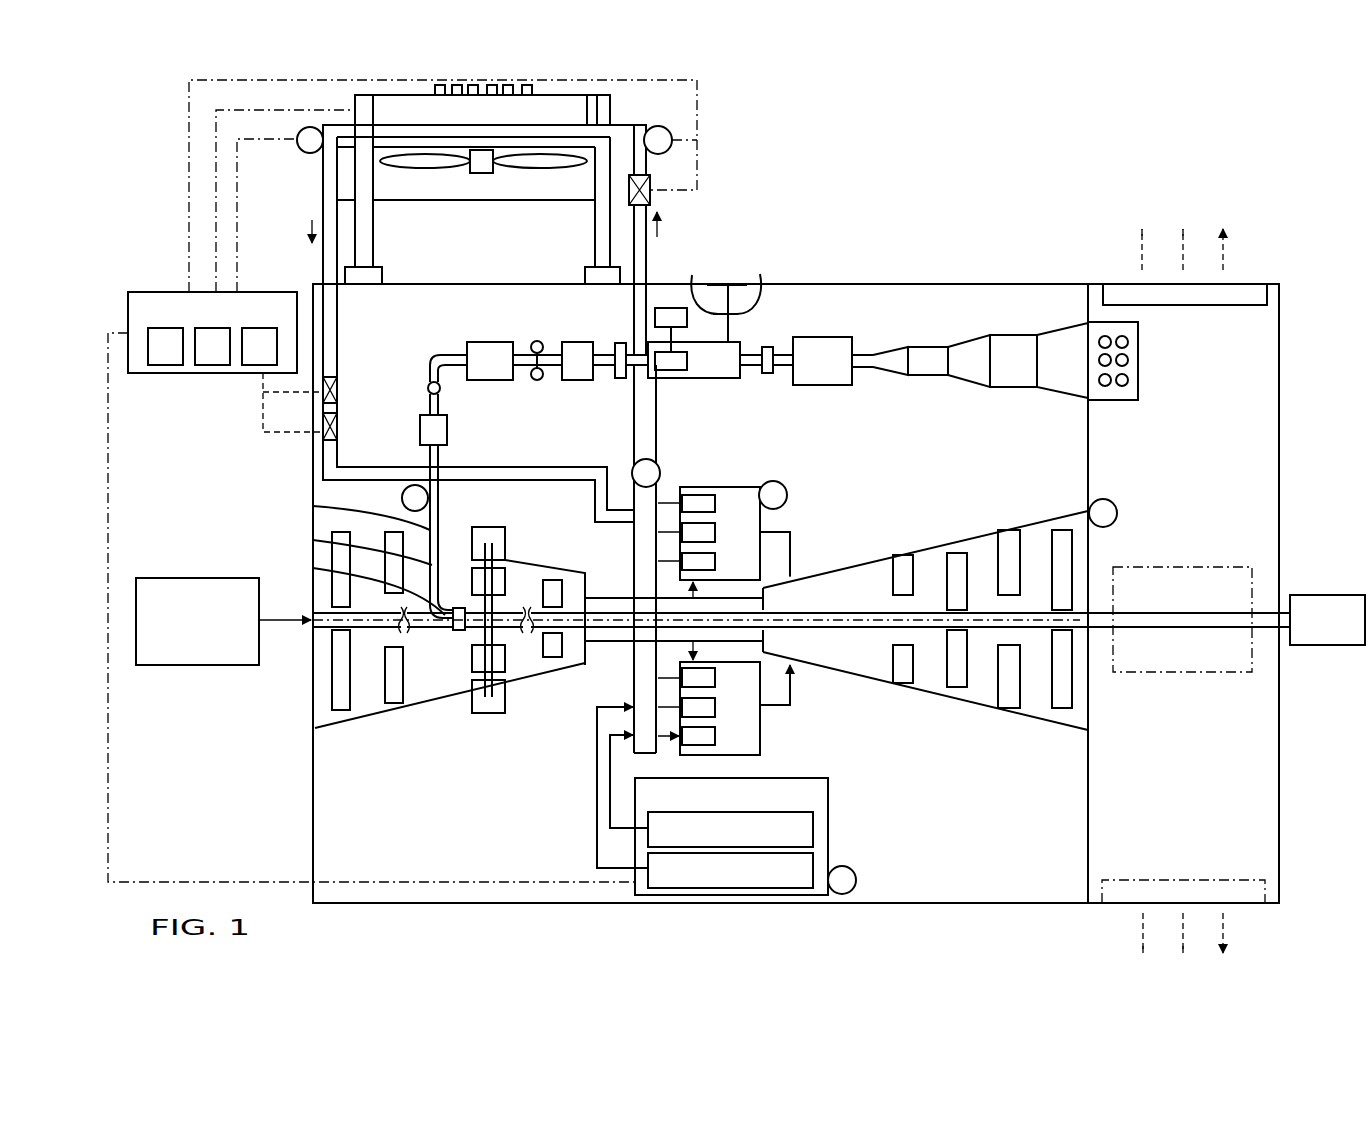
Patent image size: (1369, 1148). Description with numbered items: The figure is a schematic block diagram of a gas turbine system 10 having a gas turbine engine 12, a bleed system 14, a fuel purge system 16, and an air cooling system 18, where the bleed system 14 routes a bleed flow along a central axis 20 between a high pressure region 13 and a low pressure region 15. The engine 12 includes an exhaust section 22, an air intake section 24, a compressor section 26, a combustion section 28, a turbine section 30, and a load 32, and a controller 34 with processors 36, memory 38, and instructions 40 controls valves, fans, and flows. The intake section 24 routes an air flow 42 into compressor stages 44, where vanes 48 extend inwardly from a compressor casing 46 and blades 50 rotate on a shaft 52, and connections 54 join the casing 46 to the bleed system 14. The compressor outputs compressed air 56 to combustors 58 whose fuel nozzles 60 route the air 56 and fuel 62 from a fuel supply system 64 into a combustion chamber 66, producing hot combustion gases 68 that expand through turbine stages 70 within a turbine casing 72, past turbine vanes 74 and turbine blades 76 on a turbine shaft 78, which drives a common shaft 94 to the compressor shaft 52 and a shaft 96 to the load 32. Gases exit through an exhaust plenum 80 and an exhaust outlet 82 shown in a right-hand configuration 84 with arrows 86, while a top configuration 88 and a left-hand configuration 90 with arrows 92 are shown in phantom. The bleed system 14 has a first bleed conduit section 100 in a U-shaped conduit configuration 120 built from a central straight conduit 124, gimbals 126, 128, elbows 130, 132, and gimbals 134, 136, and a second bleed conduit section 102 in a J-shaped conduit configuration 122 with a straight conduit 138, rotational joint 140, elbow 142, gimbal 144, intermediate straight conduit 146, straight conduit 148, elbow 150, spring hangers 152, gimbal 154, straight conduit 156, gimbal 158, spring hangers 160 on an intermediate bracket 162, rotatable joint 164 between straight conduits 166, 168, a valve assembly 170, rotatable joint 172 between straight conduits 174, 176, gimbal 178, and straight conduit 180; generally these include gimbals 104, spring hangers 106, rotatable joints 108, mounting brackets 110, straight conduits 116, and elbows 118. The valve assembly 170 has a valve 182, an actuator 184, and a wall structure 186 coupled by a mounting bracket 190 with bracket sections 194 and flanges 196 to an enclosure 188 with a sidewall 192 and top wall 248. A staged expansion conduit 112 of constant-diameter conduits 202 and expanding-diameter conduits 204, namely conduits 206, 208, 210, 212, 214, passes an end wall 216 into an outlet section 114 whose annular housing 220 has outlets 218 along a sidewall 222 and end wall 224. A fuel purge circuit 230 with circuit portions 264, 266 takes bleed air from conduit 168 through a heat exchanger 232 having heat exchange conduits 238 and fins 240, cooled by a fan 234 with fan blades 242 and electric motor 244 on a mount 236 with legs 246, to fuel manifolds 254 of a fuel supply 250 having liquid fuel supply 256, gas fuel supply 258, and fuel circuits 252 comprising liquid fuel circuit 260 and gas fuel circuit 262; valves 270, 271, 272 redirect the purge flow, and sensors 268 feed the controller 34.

The gas turbine system 10 is at (916, 201).
The gas turbine engine 12 is at (232, 748).
The high pressure region 13 is at (212, 692).
The bleed system 14 is at (421, 308).
The low pressure region 15 is at (1238, 467).
The fuel purge system 16 is at (265, 470).
The air cooling system 18 is at (637, 71).
The central axis 20 is at (340, 613).
The exhaust section 22 is at (1300, 885).
The air intake section 24 is at (195, 578).
The compressor section 26 is at (218, 720).
The combustion section 28 is at (768, 752).
The turbine section 30 is at (1098, 702).
The load 32 is at (1330, 595).
The controller 34 is at (170, 292).
The processor 36 is at (164, 366).
The memory 38 is at (202, 366).
The instructions 40 is at (253, 366).
The air flow 42 is at (282, 626).
The compressor stages 44 is at (270, 753).
The compressor casing 46 is at (345, 722).
The vanes 48 is at (383, 680).
The blades 50 is at (315, 723).
The shaft 52 is at (313, 628).
The connections 54 is at (508, 560).
The compressed air flow 56 is at (696, 598).
The combustor 58 is at (760, 531).
The fuel nozzles 60 is at (716, 532).
The fuel 62 is at (580, 790).
The fuel supply system 64 is at (940, 833).
The combustion chamber 66 is at (716, 562).
The hot combustion gases 68 is at (791, 548).
The turbine stages 70 is at (912, 518).
The turbine casing 72 is at (1050, 720).
The turbine vanes 74 is at (902, 684).
The turbine blades 76 is at (957, 678).
The turbine shaft 78 is at (1080, 607).
The exhaust plenum 80 is at (1283, 868).
The exhaust outlet 82 is at (1270, 290).
The right-hand configuration 84 is at (1268, 317).
The arrows 86 is at (1227, 257).
The top configuration 88 is at (1268, 653).
The left-hand configuration 90 is at (1282, 918).
The arrows 92 is at (1140, 930).
The common shaft 94 is at (705, 630).
The shaft 96 is at (1152, 630).
The first bleed conduit section 100 is at (489, 736).
The second bleed conduit section 102 is at (849, 222).
The gimbals 104 is at (483, 300).
The spring hangers 106 is at (546, 278).
The rotatable joints 108 is at (609, 381).
The mounting brackets 110 is at (767, 221).
The staged expansion conduit 112 is at (943, 262).
The outlet section 114 is at (1200, 388).
The straight conduits 116 is at (763, 335).
The bending conduits or elbows 118 is at (446, 310).
The U-shaped conduit configuration 120 is at (501, 717).
The J-shaped conduit configuration 122 is at (789, 279).
The central straight conduit 124 is at (585, 655).
The gimbal 126 is at (470, 672).
The gimbal 128 is at (508, 582).
The bending conduit or elbow 130 is at (478, 690).
The bending conduit or elbow 132 is at (483, 547).
The gimbal 134 is at (507, 703).
The gimbal 136 is at (508, 533).
The straight conduit 138 is at (470, 632).
The rotational joint 140 is at (313, 540).
The bending conduit or elbow 142 is at (313, 568).
The gimbal 144 is at (418, 433).
The intermediate straight conduit 146 is at (313, 505).
The straight conduit 148 is at (427, 402).
The bending conduit or elbow 150 is at (447, 353).
The spring hangers 152 is at (428, 387).
The gimbal 154 is at (472, 382).
The straight conduit 156 is at (515, 346).
The gimbal 158 is at (539, 339).
The spring hangers 160 is at (530, 342).
The intermediate bracket 162 is at (531, 371).
The rotatable joint 164 is at (630, 380).
The straight conduit 166 is at (575, 342).
The straight conduit 168 is at (632, 377).
The valve assembly 170 is at (715, 380).
The rotatable joint 172 is at (770, 375).
The straight conduit 174 is at (766, 374).
The straight conduit 176 is at (782, 367).
The gimbal 178 is at (823, 386).
The straight conduit 180 is at (863, 354).
The valve 182 is at (672, 371).
The actuator 184 is at (660, 306).
The wall structure 186 is at (695, 380).
The enclosure 188 is at (880, 905).
The mounting bracket 190 is at (725, 277).
The sidewall 192 is at (797, 905).
The bracket sections 194 is at (693, 281).
The flanges 196 is at (752, 282).
The constant-diameter conduits 202 is at (914, 334).
The expanding-diameter conduits 204 is at (974, 292).
The expanding conduit 206 is at (890, 375).
The constant conduit 208 is at (930, 376).
The expanding conduit 210 is at (967, 385).
The constant conduit 212 is at (1012, 388).
The expanding conduit 214 is at (1055, 398).
The end wall 216 is at (1090, 457).
The outlets 218 is at (1122, 384).
The annular housing 220 is at (1138, 331).
The sidewall 222 is at (1097, 322).
The end wall 224 is at (1140, 363).
The fuel purge circuit 230 is at (275, 440).
The heat exchanger 232 is at (380, 103).
The fan 234 is at (388, 190).
The mount 236 is at (353, 94).
The heat exchange conduits 238 is at (587, 100).
The fins 240 is at (472, 85).
The fan blades 242 is at (380, 162).
The electric motor 244 is at (476, 174).
The legs 246 is at (356, 95).
The top wall 248 is at (372, 250).
The fuel supply 250 is at (832, 790).
The fuel circuits 252 is at (582, 842).
The fuel manifolds 254 is at (633, 547).
The liquid fuel supply 256 is at (813, 832).
The gas fuel supply 258 is at (813, 870).
The liquid fuel circuit 260 is at (610, 778).
The gas fuel circuit 262 is at (595, 790).
The circuit portion 264 is at (664, 155).
The circuit portion 266 is at (337, 312).
The sensors 268 is at (297, 138).
The valve 270 is at (650, 187).
The valve 271 is at (338, 395).
The valve 272 is at (316, 441).